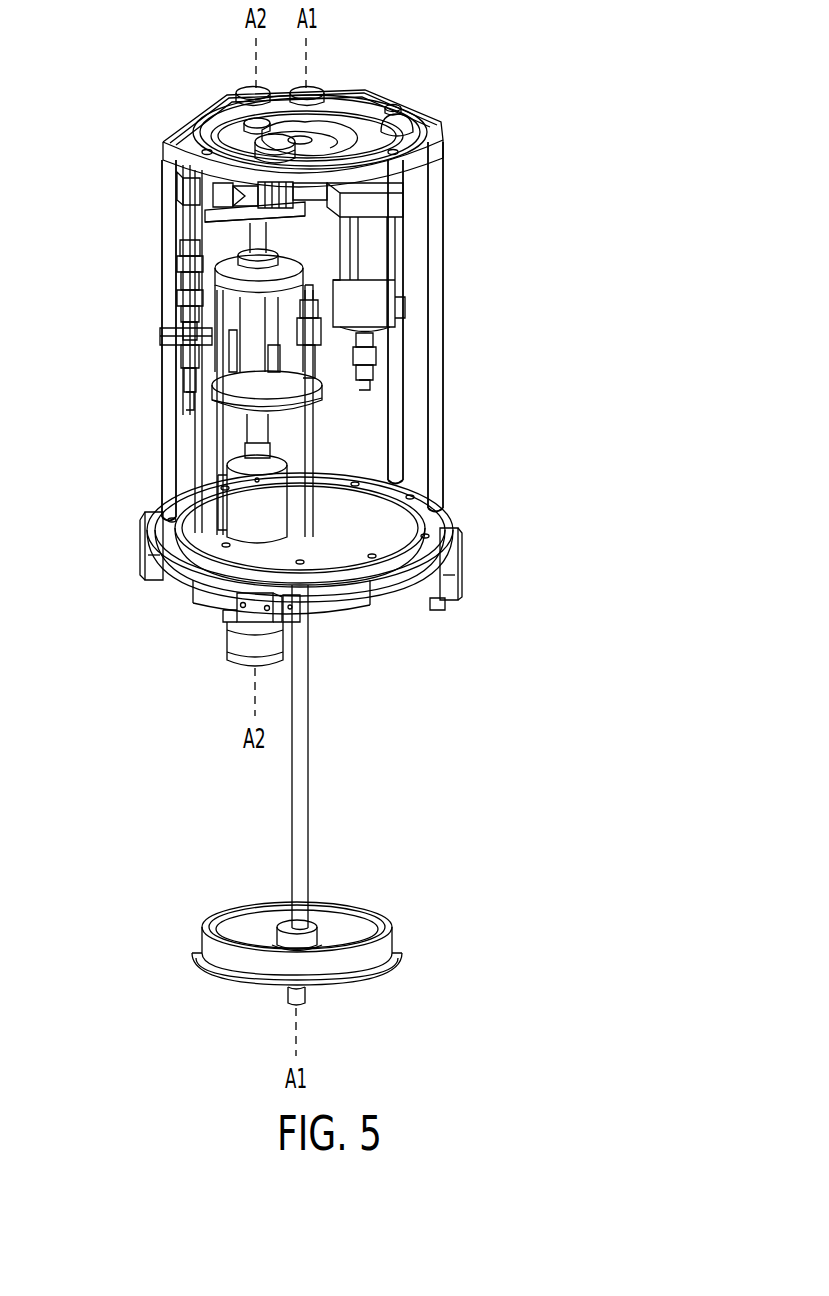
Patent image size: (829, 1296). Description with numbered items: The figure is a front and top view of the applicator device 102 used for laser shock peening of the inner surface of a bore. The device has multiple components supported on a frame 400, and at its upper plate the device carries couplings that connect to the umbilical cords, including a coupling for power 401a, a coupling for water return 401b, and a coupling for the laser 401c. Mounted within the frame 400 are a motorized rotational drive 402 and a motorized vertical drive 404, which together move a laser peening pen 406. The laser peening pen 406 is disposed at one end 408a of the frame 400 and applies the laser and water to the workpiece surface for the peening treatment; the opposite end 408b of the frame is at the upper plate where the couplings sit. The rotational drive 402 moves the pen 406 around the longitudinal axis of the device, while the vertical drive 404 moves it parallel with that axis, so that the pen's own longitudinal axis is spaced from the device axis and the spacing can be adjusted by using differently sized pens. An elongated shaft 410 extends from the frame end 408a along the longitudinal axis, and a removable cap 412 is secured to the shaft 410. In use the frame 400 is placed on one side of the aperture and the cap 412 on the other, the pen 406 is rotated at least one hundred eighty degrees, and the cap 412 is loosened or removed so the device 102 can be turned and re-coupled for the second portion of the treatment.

The applicator device 102 is at (580, 117).
The frame 400 is at (446, 184).
The coupling for power 401a is at (256, 150).
The coupling for water return 401b is at (252, 125).
The coupling for laser 401c is at (325, 120).
The motorized rotational drive 402 is at (375, 253).
The motorized vertical drive 404 is at (192, 188).
The laser peening pen 406 is at (240, 637).
The one end of the frame 408a is at (365, 563).
The upper plate 408b is at (446, 134).
The elongated shaft 410 is at (290, 770).
The removable cap 412 is at (390, 940).